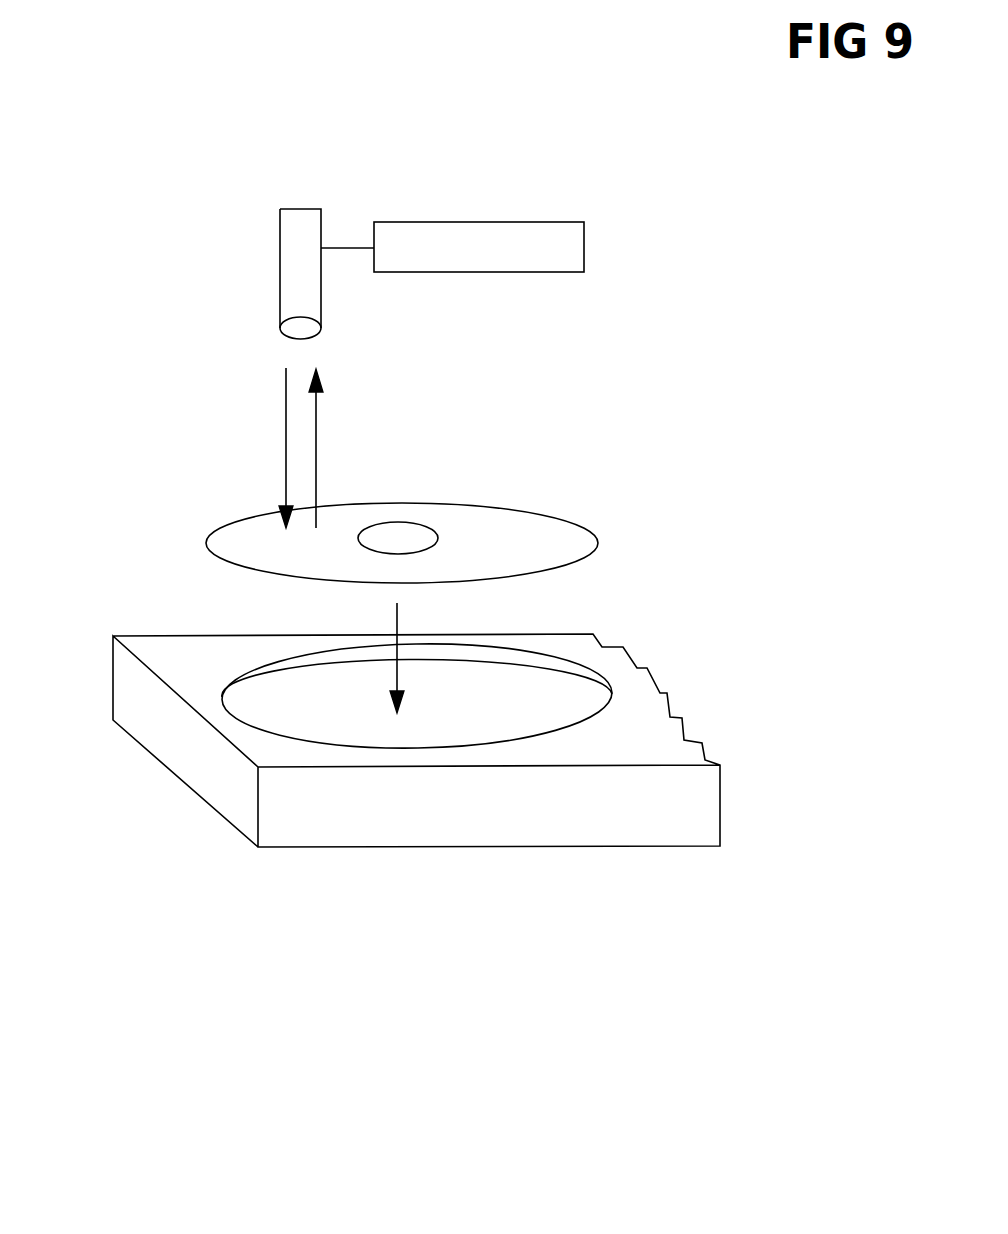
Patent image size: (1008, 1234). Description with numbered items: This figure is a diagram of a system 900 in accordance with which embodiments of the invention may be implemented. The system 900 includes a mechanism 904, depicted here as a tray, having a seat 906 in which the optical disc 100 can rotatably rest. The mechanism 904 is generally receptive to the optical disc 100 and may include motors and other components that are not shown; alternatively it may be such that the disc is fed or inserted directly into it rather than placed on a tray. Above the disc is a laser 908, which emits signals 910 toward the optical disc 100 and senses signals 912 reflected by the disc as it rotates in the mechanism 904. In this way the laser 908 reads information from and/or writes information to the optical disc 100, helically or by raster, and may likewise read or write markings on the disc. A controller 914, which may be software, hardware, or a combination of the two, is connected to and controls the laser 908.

The optical disc 100 is at (595, 541).
The system 900 is at (424, 991).
The mechanism 904 is at (118, 702).
The seat 906 is at (417, 696).
The laser 908 is at (282, 288).
The signals 910 is at (286, 450).
The signals 912 is at (317, 438).
The controller 914 is at (548, 272).